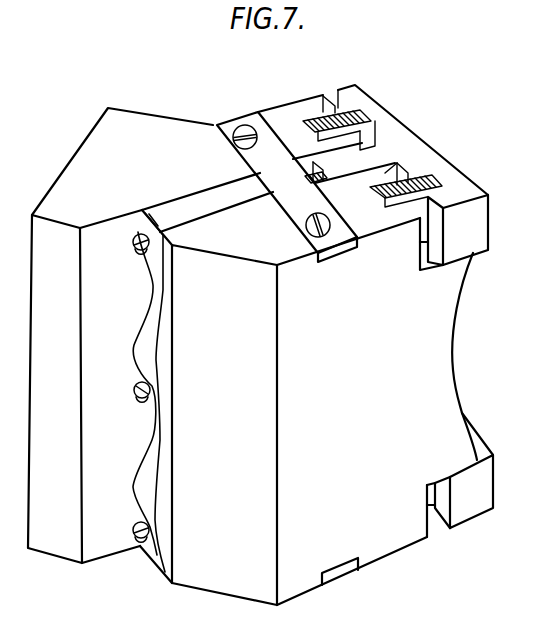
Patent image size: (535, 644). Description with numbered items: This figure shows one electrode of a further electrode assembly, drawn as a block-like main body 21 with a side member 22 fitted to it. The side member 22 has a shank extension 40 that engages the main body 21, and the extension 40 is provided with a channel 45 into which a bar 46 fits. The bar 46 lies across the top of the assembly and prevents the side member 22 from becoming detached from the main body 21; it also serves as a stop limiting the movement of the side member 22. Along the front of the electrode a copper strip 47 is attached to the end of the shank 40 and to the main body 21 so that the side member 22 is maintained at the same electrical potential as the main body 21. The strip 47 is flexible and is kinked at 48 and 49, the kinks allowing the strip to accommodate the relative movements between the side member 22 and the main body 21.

The main body 21 is at (82, 158).
The side member 22 is at (360, 93).
The extension 40 is at (220, 207).
The channel 45 is at (308, 172).
The bar 46 is at (247, 122).
The copper strip 47 is at (143, 358).
The kink 48 is at (143, 281).
The kink 49 is at (140, 455).